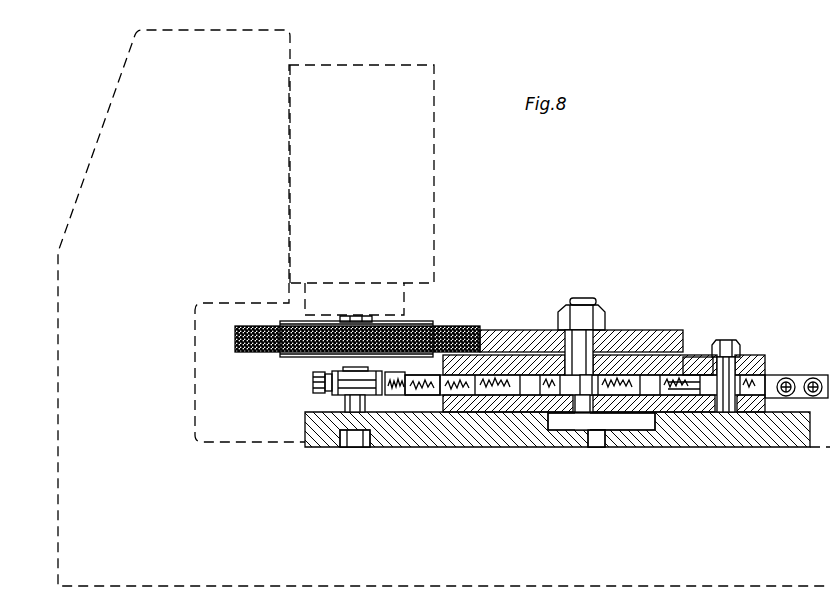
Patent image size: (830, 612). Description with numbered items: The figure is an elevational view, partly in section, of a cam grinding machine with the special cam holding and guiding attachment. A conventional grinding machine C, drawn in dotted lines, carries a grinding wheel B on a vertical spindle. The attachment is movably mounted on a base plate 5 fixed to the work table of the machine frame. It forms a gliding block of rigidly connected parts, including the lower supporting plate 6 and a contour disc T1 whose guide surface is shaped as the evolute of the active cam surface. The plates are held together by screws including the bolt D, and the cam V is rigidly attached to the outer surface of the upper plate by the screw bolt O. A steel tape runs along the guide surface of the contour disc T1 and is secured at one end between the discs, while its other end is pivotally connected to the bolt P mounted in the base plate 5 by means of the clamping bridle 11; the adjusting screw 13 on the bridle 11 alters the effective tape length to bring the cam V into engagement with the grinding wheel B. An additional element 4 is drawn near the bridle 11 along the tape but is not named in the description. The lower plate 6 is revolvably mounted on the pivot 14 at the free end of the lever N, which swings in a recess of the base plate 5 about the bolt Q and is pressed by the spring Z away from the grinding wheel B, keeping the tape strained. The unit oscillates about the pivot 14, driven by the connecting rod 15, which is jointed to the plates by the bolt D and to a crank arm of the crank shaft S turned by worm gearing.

The grinding machine C is at (262, 87).
The grinding wheel B is at (252, 346).
The cam V is at (652, 333).
The spring Z is at (505, 362).
The screw bolt O is at (575, 356).
The screw bolt D is at (740, 360).
The crank shaft S is at (812, 378).
The adjusting screw 13 is at (316, 386).
The bolt P is at (352, 418).
The clamping bridle 11 is at (392, 386).
The bar section 4 is at (420, 382).
The lower supporting plate 6 is at (475, 414).
The pivot 14 is at (578, 405).
The lever N is at (588, 420).
The bolt Q is at (600, 433).
The contour disc T1 is at (655, 388).
The connecting rod 15 is at (690, 396).
The base plate 5 is at (795, 432).